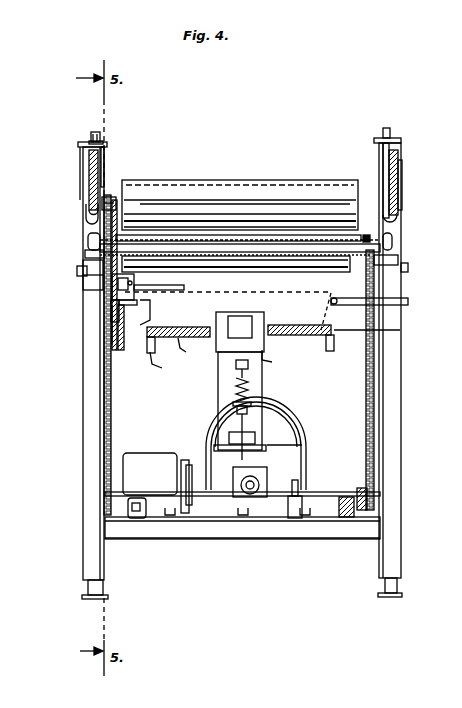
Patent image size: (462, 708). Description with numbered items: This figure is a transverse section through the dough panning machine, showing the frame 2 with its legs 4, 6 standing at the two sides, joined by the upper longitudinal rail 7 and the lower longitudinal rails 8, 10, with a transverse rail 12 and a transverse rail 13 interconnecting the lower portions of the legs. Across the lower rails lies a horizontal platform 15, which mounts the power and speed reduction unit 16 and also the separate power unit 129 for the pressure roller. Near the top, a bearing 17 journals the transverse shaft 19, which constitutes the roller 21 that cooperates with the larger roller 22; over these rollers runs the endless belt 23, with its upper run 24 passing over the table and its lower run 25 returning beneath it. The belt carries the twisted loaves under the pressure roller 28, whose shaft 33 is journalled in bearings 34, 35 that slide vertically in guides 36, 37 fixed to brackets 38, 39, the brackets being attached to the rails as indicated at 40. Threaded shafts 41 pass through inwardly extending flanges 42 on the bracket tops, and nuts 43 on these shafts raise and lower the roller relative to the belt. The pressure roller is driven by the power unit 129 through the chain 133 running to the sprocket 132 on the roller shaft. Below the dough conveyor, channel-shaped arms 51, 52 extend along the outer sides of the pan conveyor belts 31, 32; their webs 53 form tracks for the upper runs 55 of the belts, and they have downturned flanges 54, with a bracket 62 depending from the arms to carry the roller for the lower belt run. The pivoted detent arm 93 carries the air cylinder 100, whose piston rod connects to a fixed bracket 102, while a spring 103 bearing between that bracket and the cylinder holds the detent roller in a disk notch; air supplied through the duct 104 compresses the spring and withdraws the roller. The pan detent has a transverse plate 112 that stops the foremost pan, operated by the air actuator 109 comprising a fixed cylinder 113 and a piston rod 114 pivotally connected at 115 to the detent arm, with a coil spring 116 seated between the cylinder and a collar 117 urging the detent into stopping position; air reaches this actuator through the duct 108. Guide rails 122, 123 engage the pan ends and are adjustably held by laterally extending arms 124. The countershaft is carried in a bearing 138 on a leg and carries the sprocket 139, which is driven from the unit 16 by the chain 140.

The frame 2 is at (380, 535).
The leg 4 is at (395, 530).
The leg 6 is at (88, 535).
The upper longitudinal rail 7 is at (408, 266).
The lower longitudinal rail 8 is at (77, 271).
The lower longitudinal rail 10 is at (146, 520).
The transverse rail 12 is at (370, 300).
The transverse rail 13 is at (248, 530).
The horizontal platform 15 is at (210, 517).
The power and speed reduction unit 16 is at (302, 440).
The bearing 17 is at (88, 243).
The transverse shaft 19 is at (372, 240).
The roller 21 is at (248, 248).
The roller 22 is at (86, 258).
The endless belt 23 is at (395, 200).
The upper run 24 is at (290, 244).
The lower run 25 is at (296, 266).
The pressure roller 28 is at (205, 182).
The conveyor belt 31 is at (114, 345).
The conveyor belt 32 is at (334, 331).
The shaft 33 is at (389, 190).
The bearing 34 is at (88, 215).
The bearing 35 is at (400, 215).
The guide 36 is at (89, 185).
The guide 37 is at (398, 180).
The bracket 38 is at (79, 160).
The bracket 39 is at (399, 258).
The attachment point 40 is at (82, 280).
The threaded shaft 41 is at (105, 152).
The flange 42 is at (104, 143).
The nut 43 is at (100, 134).
The arm 51 is at (160, 342).
The arm 52 is at (328, 340).
The web 53 is at (181, 358).
The downturned flange 54 is at (162, 375).
The upper run 55 is at (190, 328).
The bracket 62 is at (264, 358).
The arm 93 is at (140, 286).
The air cylinder 100 is at (111, 290).
The fixed bracket 102 is at (113, 318).
The spring 103 is at (110, 300).
The duct 104 is at (120, 352).
The duct 108 is at (268, 445).
The air operated actuator 109 is at (268, 470).
The transverse plate 112 is at (240, 375).
The fixed cylinder 113 is at (229, 437).
The piston rod 114 is at (237, 410).
The pivotal connection 115 is at (233, 404).
The coil spring 116 is at (250, 390).
The collar 117 is at (250, 372).
The guide rail 122 is at (152, 314).
The guide rail 123 is at (228, 303).
The arm 124 is at (179, 285).
The power unit 129 is at (143, 468).
The sprocket 132 is at (112, 200).
The chain 133 is at (112, 440).
The bearing 138 is at (298, 520).
The sprocket 139 is at (358, 490).
The chain 140 is at (290, 528).